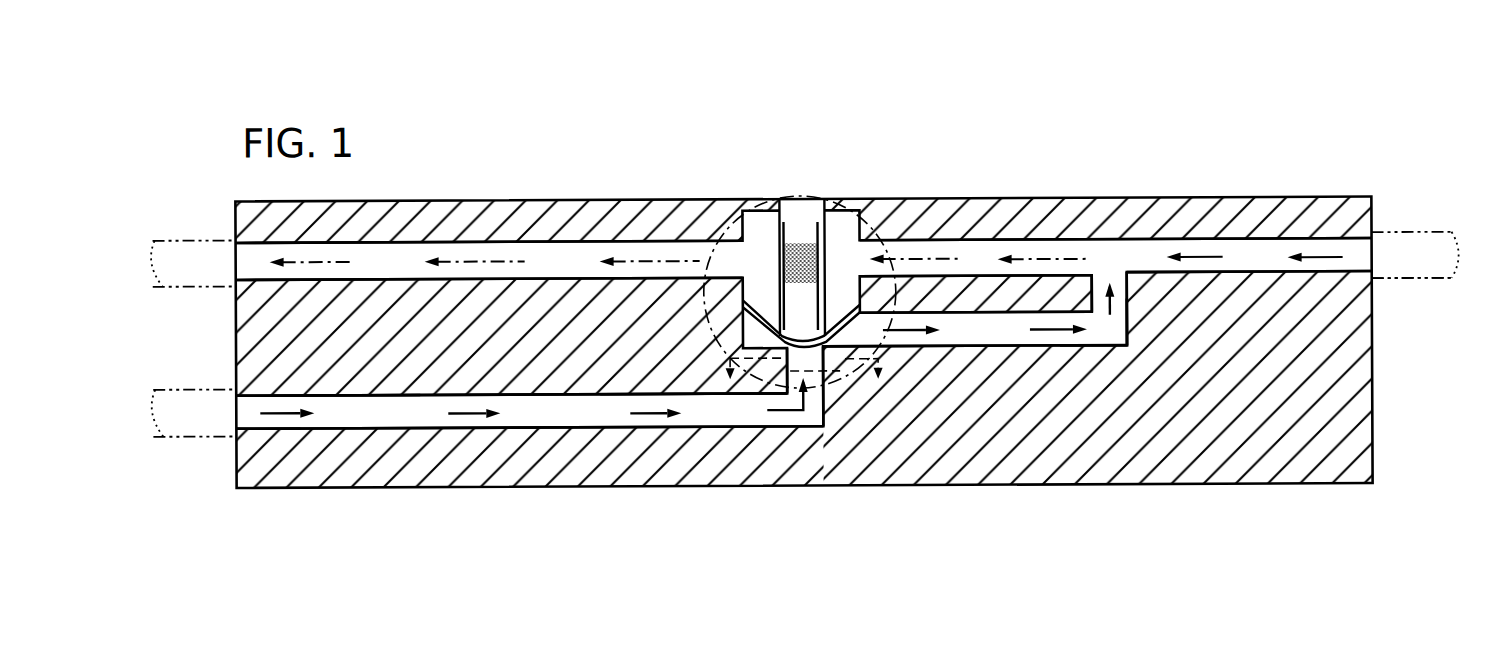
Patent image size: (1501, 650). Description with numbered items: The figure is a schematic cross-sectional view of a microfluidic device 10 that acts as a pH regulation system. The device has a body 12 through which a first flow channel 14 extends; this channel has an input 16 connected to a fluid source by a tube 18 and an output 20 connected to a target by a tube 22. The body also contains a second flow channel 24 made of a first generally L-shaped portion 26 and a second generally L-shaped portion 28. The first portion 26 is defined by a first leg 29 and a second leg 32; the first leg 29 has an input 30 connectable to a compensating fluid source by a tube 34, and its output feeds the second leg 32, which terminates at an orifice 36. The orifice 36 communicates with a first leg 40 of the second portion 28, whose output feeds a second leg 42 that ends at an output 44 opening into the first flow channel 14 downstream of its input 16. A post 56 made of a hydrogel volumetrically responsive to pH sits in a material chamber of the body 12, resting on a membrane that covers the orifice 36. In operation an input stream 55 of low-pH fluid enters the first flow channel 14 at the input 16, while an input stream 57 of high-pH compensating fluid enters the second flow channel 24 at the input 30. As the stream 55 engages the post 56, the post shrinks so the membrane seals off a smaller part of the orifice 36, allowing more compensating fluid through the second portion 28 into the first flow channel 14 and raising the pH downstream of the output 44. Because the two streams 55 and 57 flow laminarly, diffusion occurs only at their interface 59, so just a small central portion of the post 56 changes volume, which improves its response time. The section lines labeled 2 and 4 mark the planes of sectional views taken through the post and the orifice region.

The microfluidic device 10 is at (1258, 98).
The body 12 is at (1168, 474).
The first flow channel 14 is at (1104, 243).
The input 16 is at (1373, 260).
The tube 18 is at (1387, 282).
The output 20 is at (232, 260).
The tube 22 is at (182, 260).
The second flow channel 24 is at (690, 420).
The first generally L-shaped portion 26 is at (422, 440).
The second generally L-shaped portion 28 is at (1008, 358).
The first leg 29 is at (352, 418).
The input 30 is at (235, 414).
The second leg 32 is at (823, 350).
The tube 34 is at (162, 388).
The orifice 36 is at (818, 358).
The first leg 40 is at (962, 321).
The second leg 42 is at (1127, 346).
The output 44 is at (1125, 281).
The input stream of fluid 55 is at (1343, 259).
The post 56 is at (803, 223).
The input stream of compensating fluid 57 is at (495, 402).
The interface 59 is at (1045, 258).
The section line 2- 2 is at (772, 189).
The section line 4- 4 is at (805, 366).